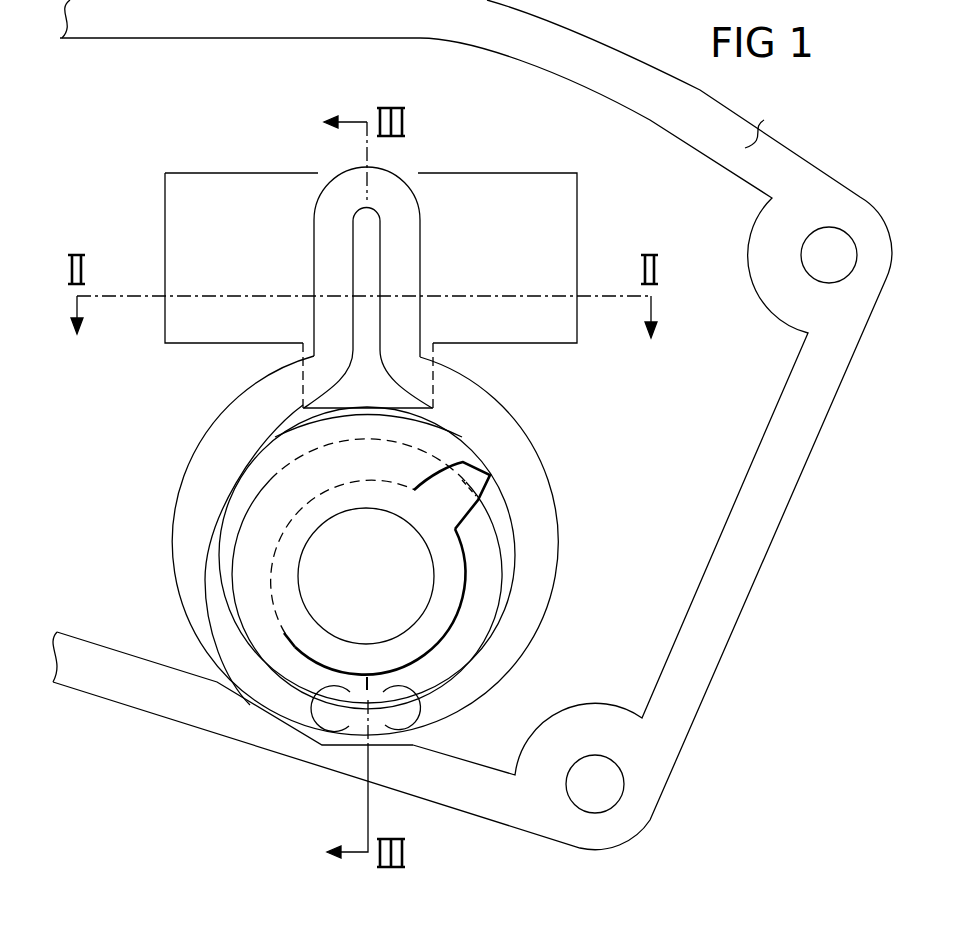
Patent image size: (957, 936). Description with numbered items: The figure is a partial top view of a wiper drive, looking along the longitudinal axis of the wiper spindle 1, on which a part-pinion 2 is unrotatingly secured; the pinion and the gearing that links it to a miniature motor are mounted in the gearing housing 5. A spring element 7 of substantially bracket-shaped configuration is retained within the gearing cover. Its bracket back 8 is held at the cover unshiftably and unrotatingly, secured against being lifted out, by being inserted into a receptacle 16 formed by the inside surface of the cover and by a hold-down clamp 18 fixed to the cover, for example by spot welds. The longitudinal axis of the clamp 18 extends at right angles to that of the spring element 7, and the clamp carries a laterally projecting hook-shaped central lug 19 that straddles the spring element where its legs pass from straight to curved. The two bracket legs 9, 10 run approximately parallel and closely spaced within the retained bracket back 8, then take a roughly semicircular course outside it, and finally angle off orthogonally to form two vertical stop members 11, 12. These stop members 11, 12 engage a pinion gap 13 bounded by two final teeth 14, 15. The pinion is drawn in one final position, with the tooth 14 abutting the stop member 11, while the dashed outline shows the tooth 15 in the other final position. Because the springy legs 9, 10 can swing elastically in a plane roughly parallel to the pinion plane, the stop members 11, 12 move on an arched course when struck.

The wiper spindle 1 is at (423, 565).
The part-pinion 2 is at (447, 605).
The gearing housing 5 is at (760, 130).
The spring element 7 is at (168, 527).
The bracket back 8 is at (300, 316).
The bracket leg 9 is at (213, 458).
The bracket leg 10 is at (497, 420).
The stop member 11 is at (313, 703).
The stop member 12 is at (377, 680).
The pinion gap 13 is at (367, 677).
The final tooth 14 is at (298, 655).
The final tooth 15 is at (477, 480).
The receptacle 16 is at (322, 240).
The hold-down clamp 18 is at (173, 196).
The hook-shaped central lug 19 is at (370, 406).